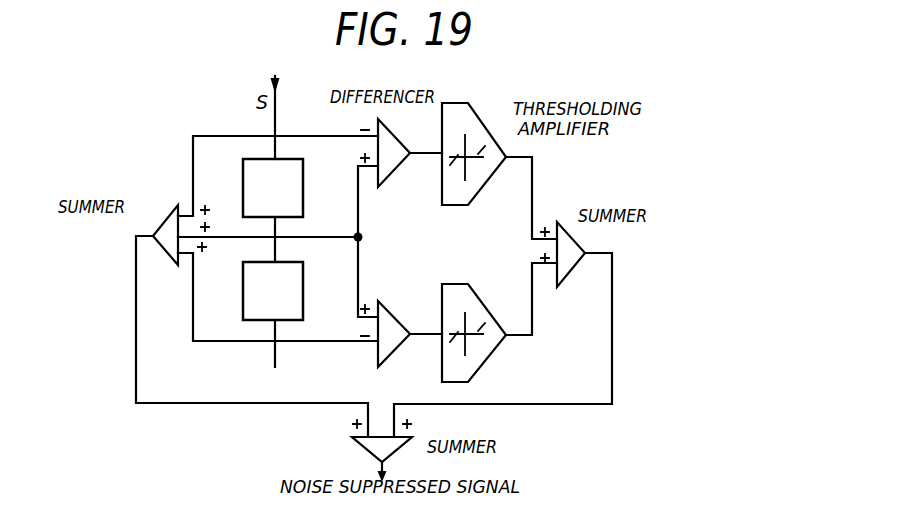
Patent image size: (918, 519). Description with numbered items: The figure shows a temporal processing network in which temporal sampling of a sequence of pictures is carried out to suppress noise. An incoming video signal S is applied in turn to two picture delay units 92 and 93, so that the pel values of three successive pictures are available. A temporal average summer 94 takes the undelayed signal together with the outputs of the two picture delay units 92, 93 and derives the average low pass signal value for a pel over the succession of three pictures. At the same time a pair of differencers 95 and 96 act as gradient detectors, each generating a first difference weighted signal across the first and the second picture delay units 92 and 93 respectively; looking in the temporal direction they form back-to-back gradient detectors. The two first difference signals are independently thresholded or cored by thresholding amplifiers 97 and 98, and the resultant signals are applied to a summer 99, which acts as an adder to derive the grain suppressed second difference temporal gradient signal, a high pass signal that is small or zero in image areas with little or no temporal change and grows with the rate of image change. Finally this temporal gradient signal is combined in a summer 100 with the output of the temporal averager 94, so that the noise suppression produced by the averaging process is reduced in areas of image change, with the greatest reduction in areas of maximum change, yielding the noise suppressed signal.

The picture delay unit 92 is at (243, 182).
The picture delay unit 93 is at (243, 285).
The temporal average summer 94 is at (163, 227).
The differencer 95 is at (396, 138).
The differencer 96 is at (396, 320).
The amplifier 97 is at (478, 104).
The amplifier 98 is at (485, 306).
The summer 99 is at (579, 244).
The summer 100 is at (365, 459).